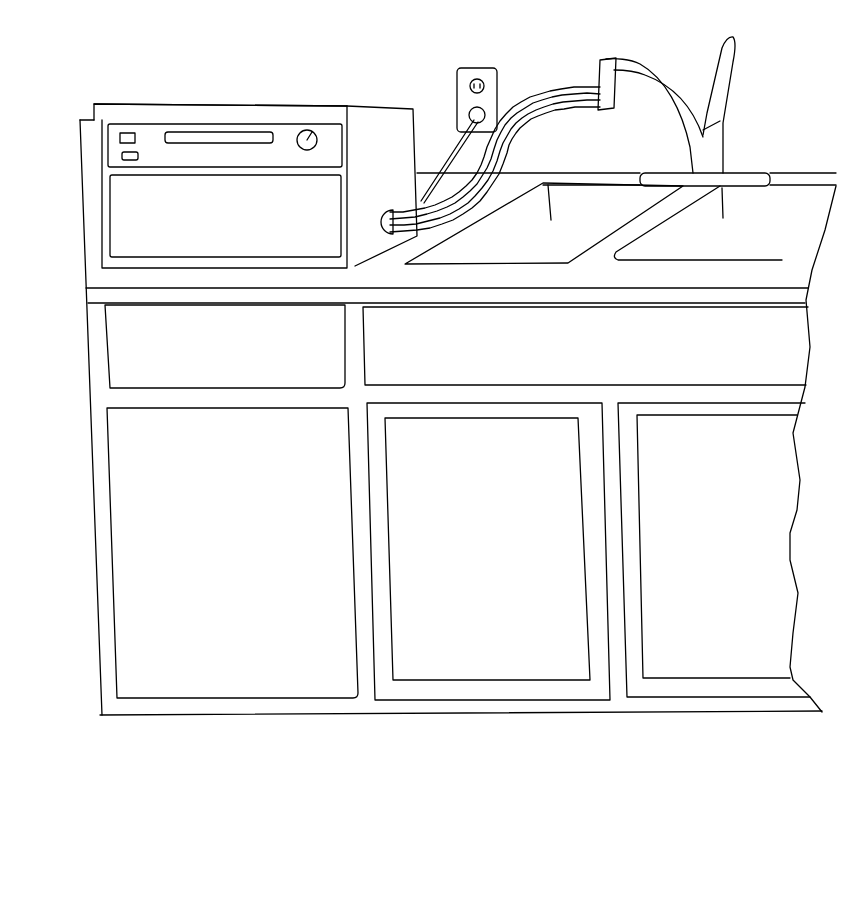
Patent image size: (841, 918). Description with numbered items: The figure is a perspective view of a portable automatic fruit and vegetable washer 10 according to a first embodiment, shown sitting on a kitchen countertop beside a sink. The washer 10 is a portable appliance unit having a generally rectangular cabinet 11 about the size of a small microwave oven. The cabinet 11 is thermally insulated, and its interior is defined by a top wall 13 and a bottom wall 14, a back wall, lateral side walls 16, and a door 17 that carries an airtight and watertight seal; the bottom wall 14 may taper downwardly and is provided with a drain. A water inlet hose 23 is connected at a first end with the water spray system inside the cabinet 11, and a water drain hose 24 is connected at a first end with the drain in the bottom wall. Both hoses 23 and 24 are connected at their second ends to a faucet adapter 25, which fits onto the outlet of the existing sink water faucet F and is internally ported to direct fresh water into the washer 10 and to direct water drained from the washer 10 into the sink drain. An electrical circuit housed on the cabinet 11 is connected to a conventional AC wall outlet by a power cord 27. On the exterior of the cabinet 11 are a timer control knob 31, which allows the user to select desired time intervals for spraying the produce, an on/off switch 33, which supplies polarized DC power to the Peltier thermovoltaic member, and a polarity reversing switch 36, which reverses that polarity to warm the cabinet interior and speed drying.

The fruit and vegetable washer 10 is at (333, 63).
The cabinet 11 is at (370, 117).
The top wall 13 is at (138, 103).
The bottom wall 14 is at (370, 262).
The lateral side walls 16 is at (400, 178).
The door 17 is at (243, 223).
The water inlet hose 23 is at (540, 97).
The water drain hose 24 is at (557, 117).
The faucet adapter 25 is at (615, 92).
The power cord 27 is at (445, 135).
The timer control knob 31 is at (300, 130).
The on/off switch 33 is at (125, 132).
The polarity reversing switch 36 is at (132, 162).
The sink water faucet F is at (727, 110).